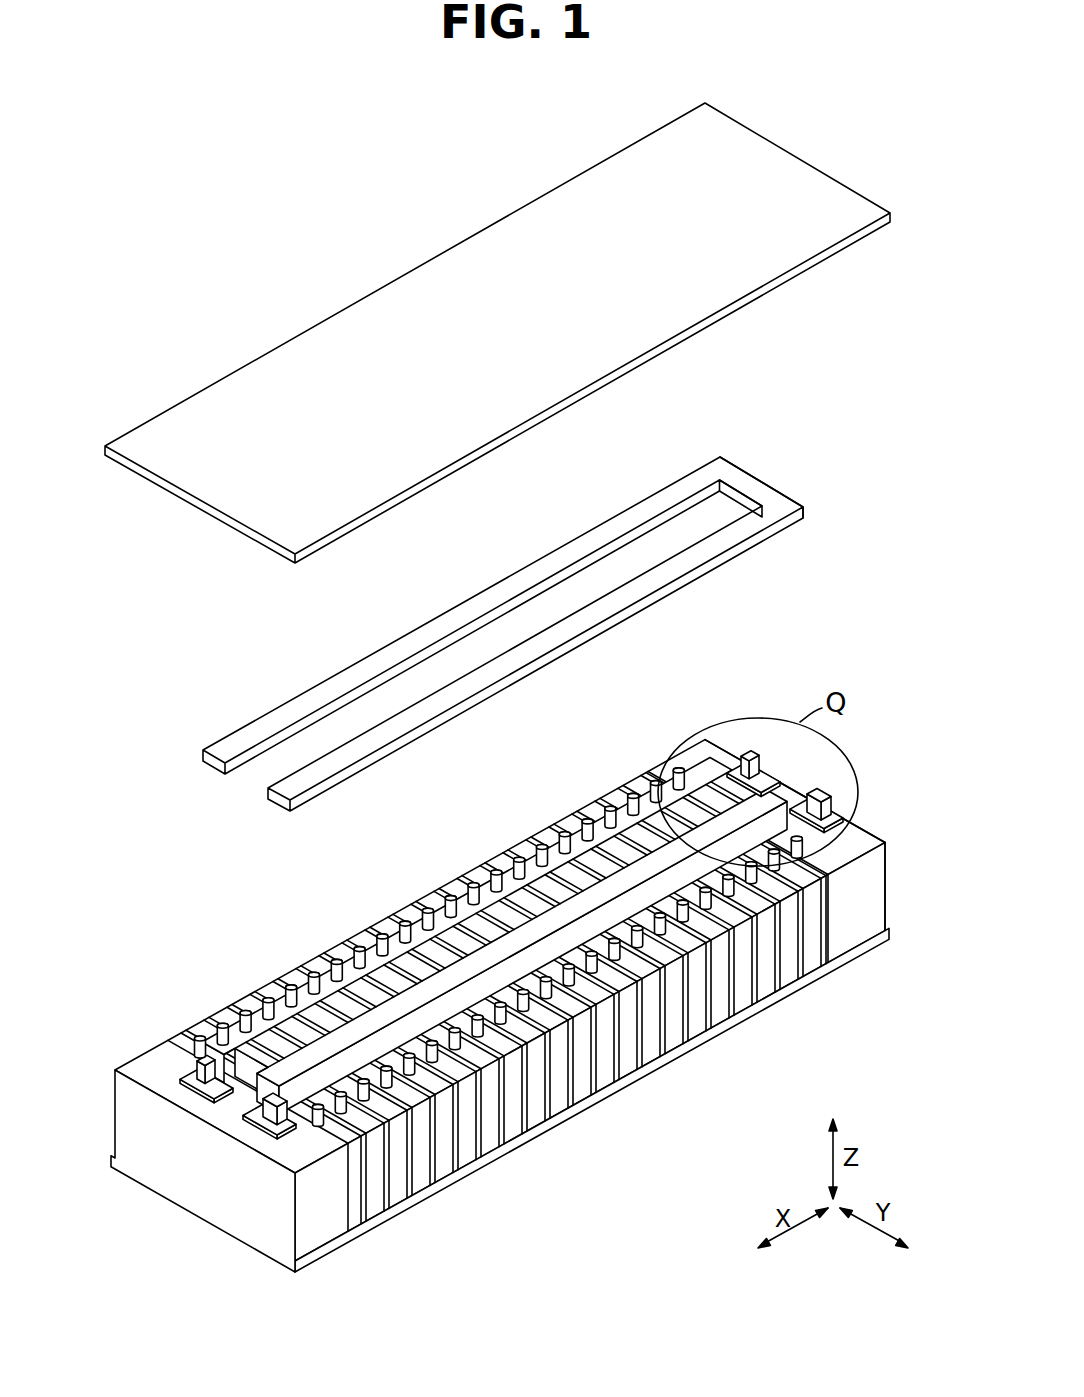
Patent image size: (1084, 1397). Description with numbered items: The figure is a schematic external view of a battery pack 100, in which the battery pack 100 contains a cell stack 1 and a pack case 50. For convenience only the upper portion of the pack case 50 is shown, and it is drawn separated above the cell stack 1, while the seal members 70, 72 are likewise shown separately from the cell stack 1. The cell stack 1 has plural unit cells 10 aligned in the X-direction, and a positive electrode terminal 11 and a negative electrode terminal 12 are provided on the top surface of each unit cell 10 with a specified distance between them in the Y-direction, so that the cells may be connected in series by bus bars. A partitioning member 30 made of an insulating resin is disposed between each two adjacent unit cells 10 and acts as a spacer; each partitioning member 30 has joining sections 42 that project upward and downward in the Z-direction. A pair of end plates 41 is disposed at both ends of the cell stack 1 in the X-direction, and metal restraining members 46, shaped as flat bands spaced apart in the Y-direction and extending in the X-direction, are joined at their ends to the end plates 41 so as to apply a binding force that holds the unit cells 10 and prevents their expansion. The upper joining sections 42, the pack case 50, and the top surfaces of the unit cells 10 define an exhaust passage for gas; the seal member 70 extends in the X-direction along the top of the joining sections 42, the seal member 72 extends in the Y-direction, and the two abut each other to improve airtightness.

The battery pack 100 is at (281, 170).
The pack case 50 is at (790, 158).
The seal member 70 is at (653, 504).
The seal member 72 is at (770, 484).
The cell stack 1 is at (208, 973).
The end plate 41 is at (130, 1138).
The partitioning member 30 is at (413, 1178).
The joining section 42 is at (441, 915).
The restraining member 46 is at (182, 1086).
The unit cell 10 is at (256, 1088).
The positive electrode terminal 11 is at (186, 1040).
The negative electrode terminal 12 is at (318, 1126).